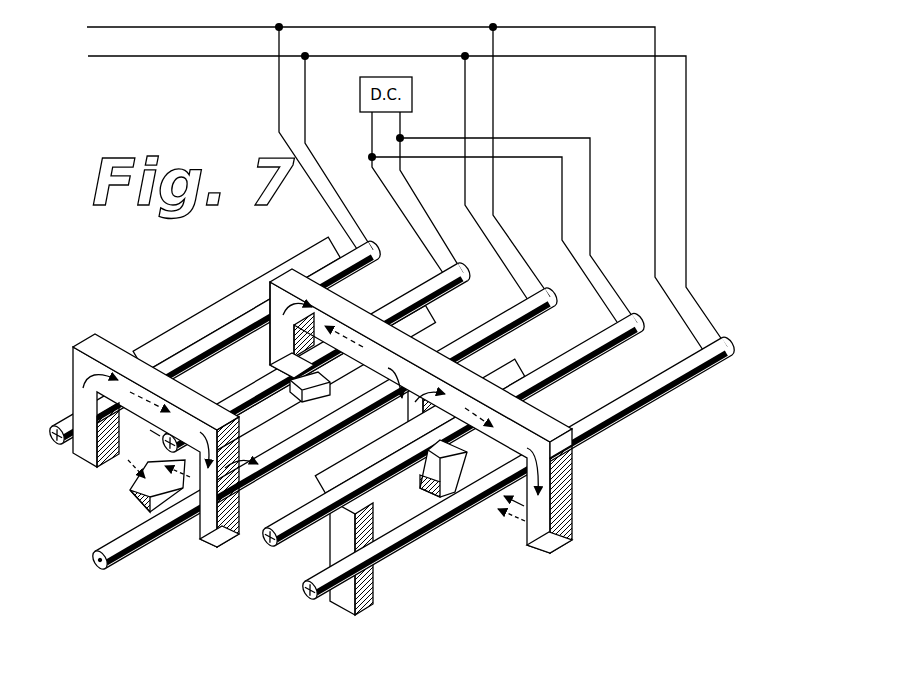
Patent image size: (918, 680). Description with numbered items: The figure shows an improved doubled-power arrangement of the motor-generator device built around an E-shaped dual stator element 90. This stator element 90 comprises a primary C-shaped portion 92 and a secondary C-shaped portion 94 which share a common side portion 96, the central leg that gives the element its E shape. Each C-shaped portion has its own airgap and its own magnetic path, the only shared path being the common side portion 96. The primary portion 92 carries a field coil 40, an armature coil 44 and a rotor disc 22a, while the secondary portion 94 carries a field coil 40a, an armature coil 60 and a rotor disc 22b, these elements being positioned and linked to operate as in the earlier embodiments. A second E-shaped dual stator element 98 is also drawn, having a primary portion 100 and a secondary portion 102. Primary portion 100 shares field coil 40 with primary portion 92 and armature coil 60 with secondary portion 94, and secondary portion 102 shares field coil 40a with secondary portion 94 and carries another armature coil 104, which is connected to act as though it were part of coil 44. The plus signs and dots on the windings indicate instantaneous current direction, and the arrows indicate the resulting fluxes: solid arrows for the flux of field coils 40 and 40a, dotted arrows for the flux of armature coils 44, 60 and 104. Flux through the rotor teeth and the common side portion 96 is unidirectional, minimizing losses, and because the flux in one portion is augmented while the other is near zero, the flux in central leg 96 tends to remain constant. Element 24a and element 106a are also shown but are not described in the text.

The rotor disc 22a is at (130, 520).
The rotor disc 22b is at (490, 506).
The armature block 24a is at (119, 486).
The field coil 40 is at (258, 382).
The field coil 40a is at (393, 456).
The armature coil 44 is at (222, 325).
The armature coil 60 is at (362, 398).
The dual stator element 90 is at (157, 435).
The primary C-shaped portion 92 is at (155, 423).
The secondary C-shaped portion 94 is at (270, 497).
The common side portion 96 is at (213, 538).
The second dual stator element 98 is at (283, 262).
The primary portion 100 is at (454, 384).
The secondary portion 102 is at (478, 382).
The armature coil 104 is at (598, 434).
The block 106a is at (490, 450).